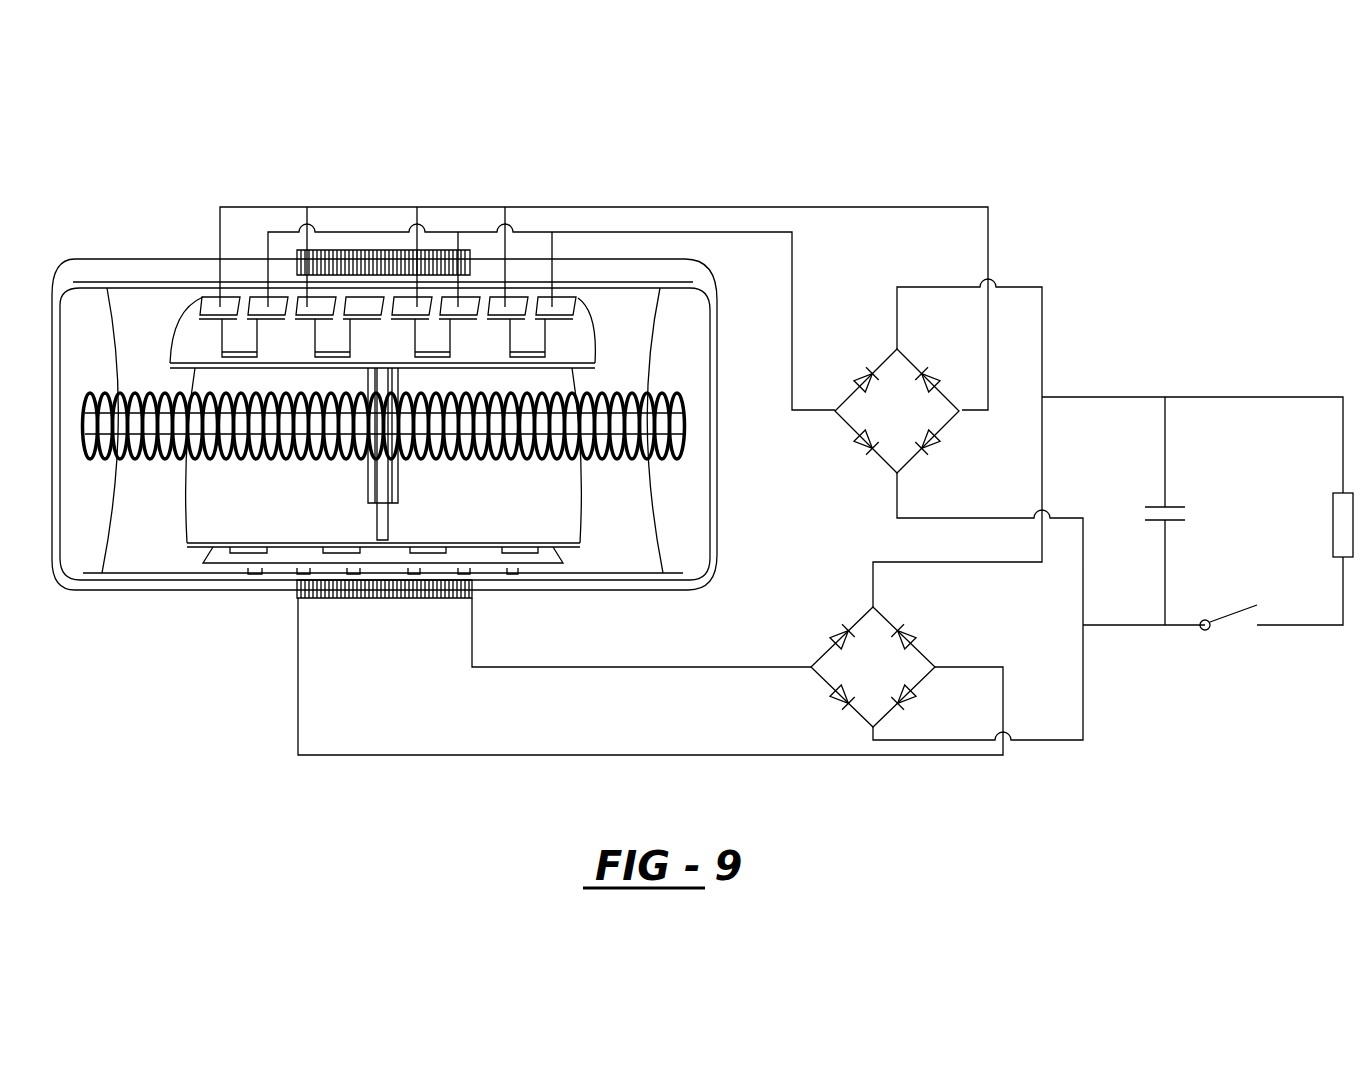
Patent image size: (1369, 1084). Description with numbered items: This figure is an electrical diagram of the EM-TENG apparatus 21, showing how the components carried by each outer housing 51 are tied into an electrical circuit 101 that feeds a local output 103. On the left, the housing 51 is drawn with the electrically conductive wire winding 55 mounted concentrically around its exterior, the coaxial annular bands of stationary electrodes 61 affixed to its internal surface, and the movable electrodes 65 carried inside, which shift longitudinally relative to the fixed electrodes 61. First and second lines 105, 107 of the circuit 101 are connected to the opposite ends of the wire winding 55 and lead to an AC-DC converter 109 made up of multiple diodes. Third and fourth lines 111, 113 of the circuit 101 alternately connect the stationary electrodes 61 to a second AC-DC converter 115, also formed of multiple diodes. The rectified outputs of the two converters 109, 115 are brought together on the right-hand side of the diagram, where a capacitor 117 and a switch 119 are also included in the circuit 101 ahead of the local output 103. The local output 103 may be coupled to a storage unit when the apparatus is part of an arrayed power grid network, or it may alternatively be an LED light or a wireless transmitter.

The EM-TENG apparatus 21 is at (999, 810).
The outer housing 51 is at (102, 267).
The wire winding 55 is at (418, 597).
The electrodes 61 is at (207, 304).
The electrodes 65 is at (533, 340).
The electrical circuit 101 is at (1140, 242).
The local output 103 is at (1340, 513).
The first line 105 is at (298, 685).
The second line 107 is at (572, 665).
The AC-DC converter 109 is at (800, 636).
The third line 111 is at (538, 207).
The fourth line 113 is at (792, 288).
The AC-DC converter 115 is at (825, 441).
The capacitor 117 is at (1136, 499).
The switch 119 is at (1236, 648).